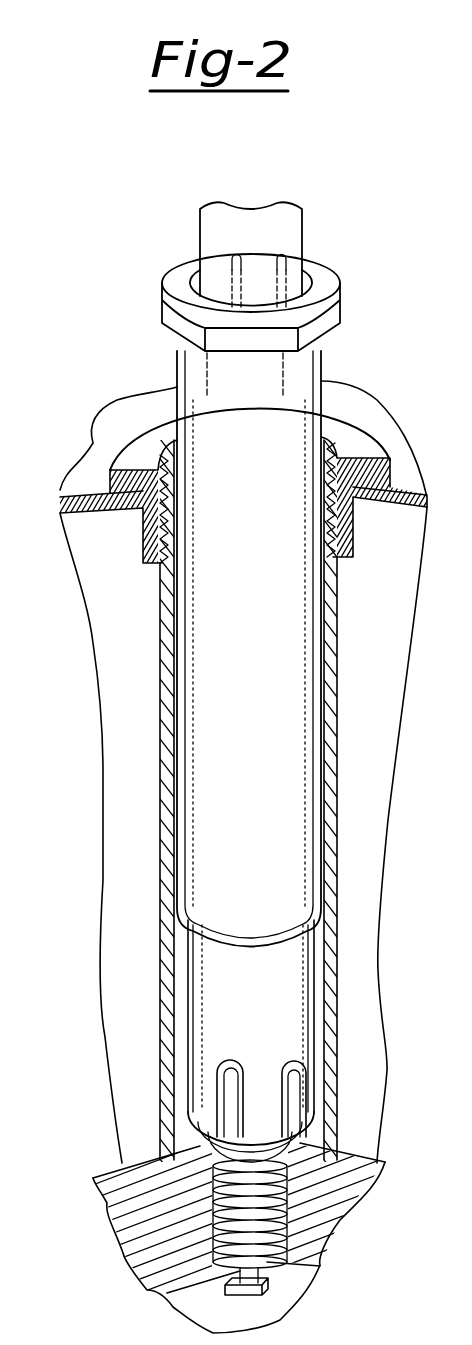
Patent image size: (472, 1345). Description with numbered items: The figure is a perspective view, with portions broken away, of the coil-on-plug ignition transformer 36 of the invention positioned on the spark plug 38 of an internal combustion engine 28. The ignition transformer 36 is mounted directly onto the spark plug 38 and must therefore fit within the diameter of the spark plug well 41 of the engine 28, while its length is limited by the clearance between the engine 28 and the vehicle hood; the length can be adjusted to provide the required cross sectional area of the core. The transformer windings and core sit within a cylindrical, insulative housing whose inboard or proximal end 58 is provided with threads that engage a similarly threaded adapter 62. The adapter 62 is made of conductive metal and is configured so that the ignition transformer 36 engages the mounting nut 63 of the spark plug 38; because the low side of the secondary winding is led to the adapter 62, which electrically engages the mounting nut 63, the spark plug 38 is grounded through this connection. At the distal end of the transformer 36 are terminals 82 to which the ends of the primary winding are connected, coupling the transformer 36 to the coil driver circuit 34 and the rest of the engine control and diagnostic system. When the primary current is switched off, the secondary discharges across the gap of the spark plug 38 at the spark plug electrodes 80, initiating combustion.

The engine 28 is at (368, 400).
The coil driver circuit 34 is at (219, 218).
The ignition transformer 36 is at (293, 387).
The spark plug 38 is at (288, 1234).
The spark plug well 41 is at (320, 656).
The proximal end of the housing 58 is at (198, 779).
The adapter 62 is at (205, 1038).
The mounting nut 63 is at (293, 1100).
The spark plug electrodes 80 is at (253, 1294).
The terminals 82 is at (232, 287).